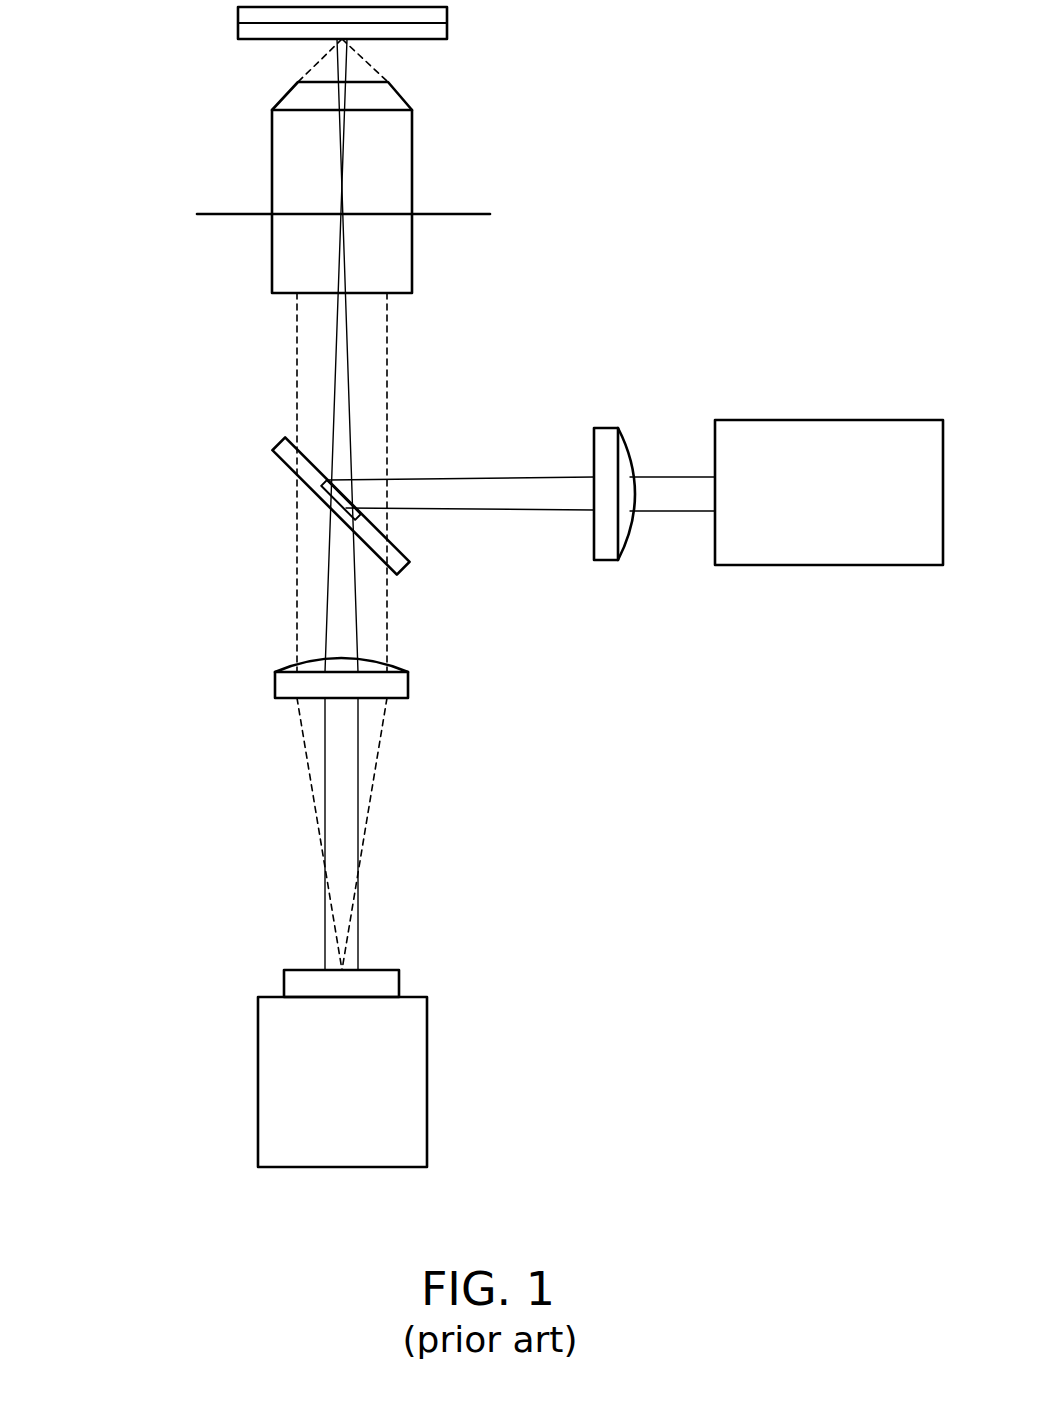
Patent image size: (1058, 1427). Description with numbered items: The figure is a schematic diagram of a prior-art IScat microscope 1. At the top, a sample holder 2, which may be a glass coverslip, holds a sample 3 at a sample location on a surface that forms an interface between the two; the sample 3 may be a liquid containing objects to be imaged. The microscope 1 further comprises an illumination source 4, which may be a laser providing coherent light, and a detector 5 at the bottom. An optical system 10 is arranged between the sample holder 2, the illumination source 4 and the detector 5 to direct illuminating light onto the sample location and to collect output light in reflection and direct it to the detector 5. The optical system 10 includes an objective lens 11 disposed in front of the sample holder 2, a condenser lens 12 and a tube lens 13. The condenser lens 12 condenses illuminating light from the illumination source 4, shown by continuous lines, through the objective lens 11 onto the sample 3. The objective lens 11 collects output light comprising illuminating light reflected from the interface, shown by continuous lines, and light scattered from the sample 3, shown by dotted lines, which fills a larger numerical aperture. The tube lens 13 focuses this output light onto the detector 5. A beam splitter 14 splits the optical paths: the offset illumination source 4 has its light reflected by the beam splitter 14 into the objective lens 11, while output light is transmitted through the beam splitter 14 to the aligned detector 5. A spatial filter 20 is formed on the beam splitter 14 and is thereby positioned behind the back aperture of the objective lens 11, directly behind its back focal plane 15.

The microscope 1 is at (122, 340).
The sample holder 2 is at (247, 30).
The sample 3 is at (437, 14).
The illumination source 4 is at (812, 547).
The detector 5 is at (282, 1080).
The optical system 10 is at (200, 534).
The objective lens 11 is at (395, 172).
The condenser lens 12 is at (606, 437).
The tube lens 13 is at (290, 685).
The beam splitter 14 is at (290, 460).
The back focal plane 15 is at (232, 214).
The spatial filter 20 is at (351, 476).